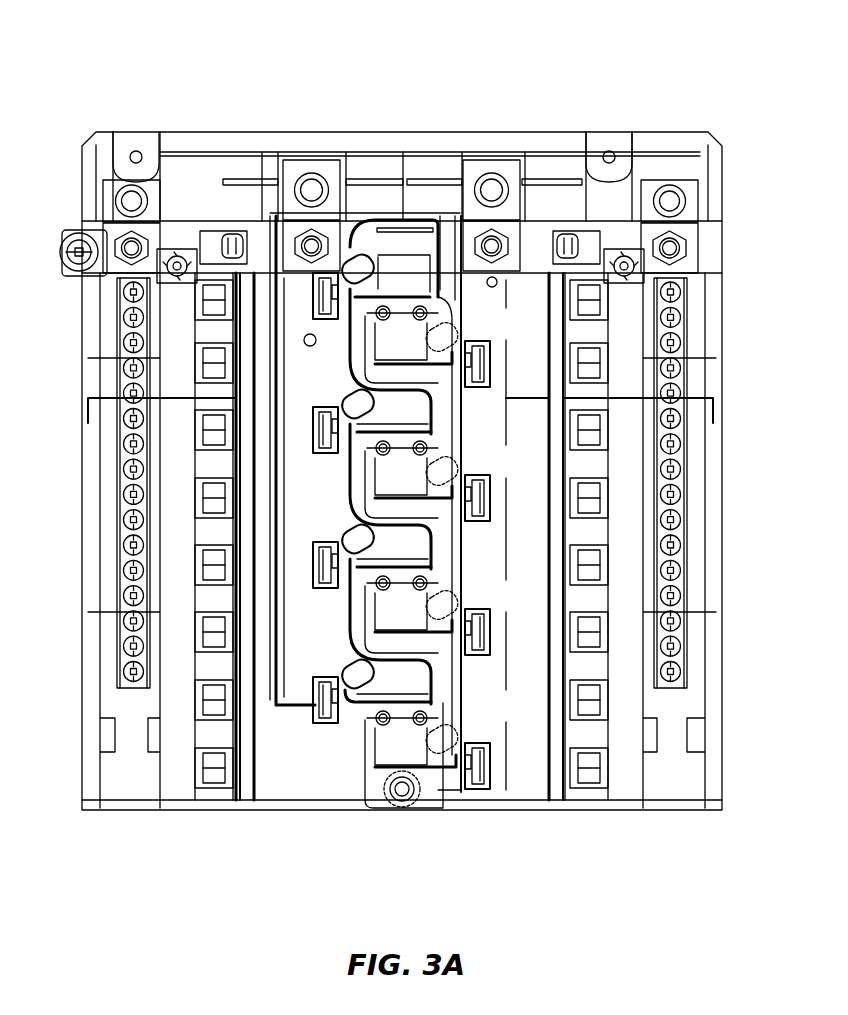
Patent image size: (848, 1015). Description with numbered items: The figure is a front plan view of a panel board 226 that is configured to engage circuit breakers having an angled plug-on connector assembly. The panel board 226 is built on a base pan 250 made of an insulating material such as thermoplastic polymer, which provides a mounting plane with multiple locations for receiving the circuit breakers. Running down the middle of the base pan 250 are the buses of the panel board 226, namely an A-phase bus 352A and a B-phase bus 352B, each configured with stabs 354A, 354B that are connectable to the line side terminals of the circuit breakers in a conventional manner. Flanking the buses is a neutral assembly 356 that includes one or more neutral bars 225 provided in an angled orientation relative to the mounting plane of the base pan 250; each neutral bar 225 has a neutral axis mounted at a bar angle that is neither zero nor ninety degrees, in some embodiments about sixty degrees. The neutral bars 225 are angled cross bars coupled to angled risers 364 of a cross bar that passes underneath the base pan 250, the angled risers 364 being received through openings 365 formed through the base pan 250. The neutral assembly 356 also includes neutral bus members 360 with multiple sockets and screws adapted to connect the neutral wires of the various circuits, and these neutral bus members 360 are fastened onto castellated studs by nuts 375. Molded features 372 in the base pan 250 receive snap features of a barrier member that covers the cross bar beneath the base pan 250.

The panel board 226 is at (218, 68).
The base pan 250 is at (641, 130).
The neutral bar 225 is at (238, 470).
The A-phase bus 352A is at (275, 695).
The B-phase bus 352B is at (507, 737).
The stab 354A is at (410, 290).
The stab 354B is at (400, 360).
The neutral assembly 356 is at (70, 288).
The neutral bus member 360 is at (110, 556).
The angled riser 364 is at (207, 232).
The opening 365 is at (203, 262).
The feature 372 is at (178, 257).
The nut 375 is at (124, 243).